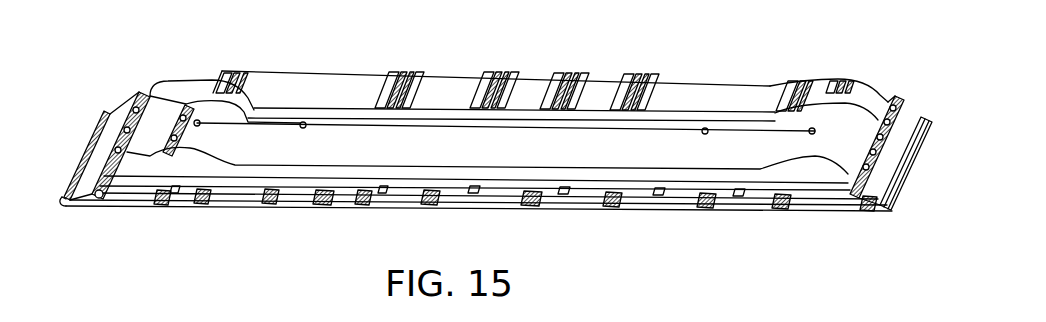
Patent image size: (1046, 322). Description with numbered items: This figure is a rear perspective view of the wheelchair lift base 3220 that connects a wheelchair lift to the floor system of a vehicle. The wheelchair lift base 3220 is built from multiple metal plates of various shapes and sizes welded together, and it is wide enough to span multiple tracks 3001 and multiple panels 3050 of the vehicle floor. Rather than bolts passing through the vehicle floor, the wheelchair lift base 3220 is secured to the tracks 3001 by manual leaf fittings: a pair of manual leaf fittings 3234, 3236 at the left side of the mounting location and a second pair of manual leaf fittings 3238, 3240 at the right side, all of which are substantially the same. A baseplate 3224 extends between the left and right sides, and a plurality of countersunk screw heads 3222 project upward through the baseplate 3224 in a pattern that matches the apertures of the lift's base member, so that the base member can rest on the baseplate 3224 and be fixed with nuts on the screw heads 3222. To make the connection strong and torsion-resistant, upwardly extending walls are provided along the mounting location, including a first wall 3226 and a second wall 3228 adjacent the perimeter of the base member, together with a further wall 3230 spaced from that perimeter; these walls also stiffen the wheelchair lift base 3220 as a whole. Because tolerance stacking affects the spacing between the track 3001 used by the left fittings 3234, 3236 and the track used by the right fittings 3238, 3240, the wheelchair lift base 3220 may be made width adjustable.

The track 3001 is at (785, 203).
The first wall 3226 is at (133, 163).
The baseplate 3224 is at (565, 145).
The countersunk screw heads 3222 is at (703, 125).
The panel 3050 is at (323, 80).
The second wall 3228 is at (222, 112).
The wall 3230 is at (168, 90).
The wheelchair lift base 3220 is at (849, 93).
The manual leaf fitting 3236 is at (116, 103).
The manual leaf fitting 3234 is at (96, 150).
The manual leaf fitting 3240 is at (898, 97).
The manual leaf fitting 3238 is at (888, 168).